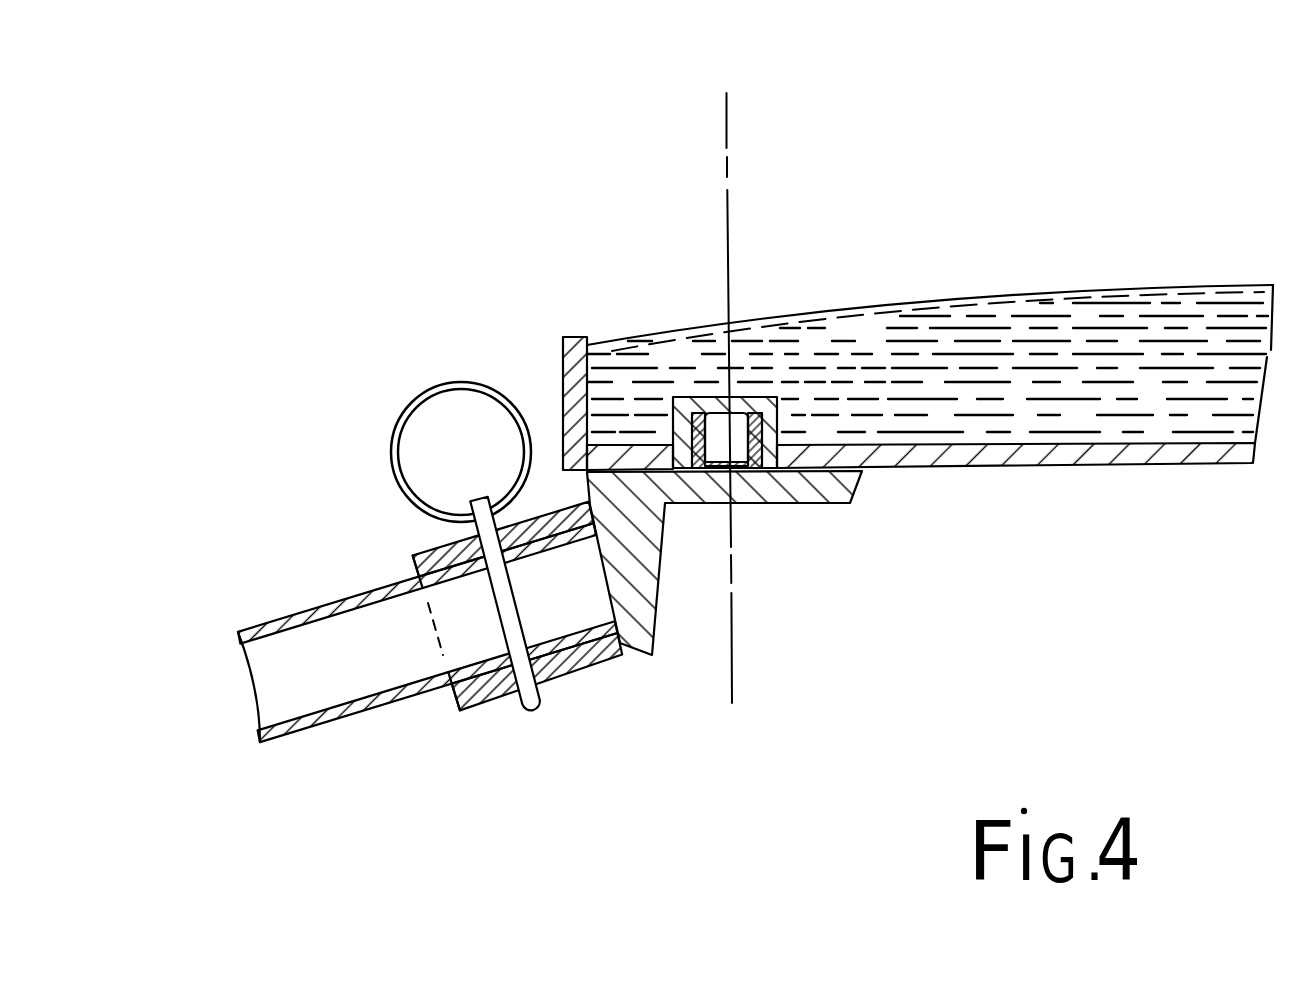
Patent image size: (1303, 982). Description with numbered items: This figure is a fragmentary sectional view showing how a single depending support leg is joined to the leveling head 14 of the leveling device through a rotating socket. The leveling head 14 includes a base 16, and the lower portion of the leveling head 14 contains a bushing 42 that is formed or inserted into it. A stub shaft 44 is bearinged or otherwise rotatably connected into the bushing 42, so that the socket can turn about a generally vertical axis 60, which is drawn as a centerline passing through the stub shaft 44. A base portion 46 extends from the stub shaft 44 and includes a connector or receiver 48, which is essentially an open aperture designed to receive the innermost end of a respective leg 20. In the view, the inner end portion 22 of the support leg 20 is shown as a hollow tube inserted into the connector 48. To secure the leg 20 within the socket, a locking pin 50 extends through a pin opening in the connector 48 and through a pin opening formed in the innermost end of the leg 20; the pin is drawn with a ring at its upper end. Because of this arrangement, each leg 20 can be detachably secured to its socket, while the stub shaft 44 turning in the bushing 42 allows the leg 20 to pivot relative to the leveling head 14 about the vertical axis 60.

The leveling head 14 is at (918, 316).
The base 16 is at (1135, 468).
The support leg 20 is at (235, 672).
The inner end portion 22 is at (323, 605).
The bushing 42 is at (779, 427).
The stub shaft 44 is at (737, 443).
The base portion 46 is at (683, 485).
The connector 48 is at (577, 680).
The locking pin 50 is at (500, 610).
The vertical axis 60 is at (728, 142).